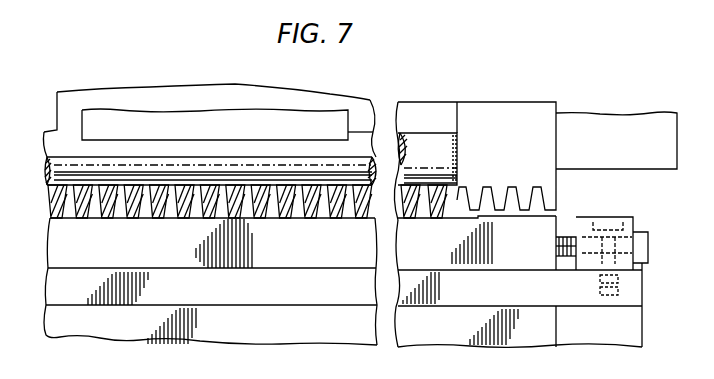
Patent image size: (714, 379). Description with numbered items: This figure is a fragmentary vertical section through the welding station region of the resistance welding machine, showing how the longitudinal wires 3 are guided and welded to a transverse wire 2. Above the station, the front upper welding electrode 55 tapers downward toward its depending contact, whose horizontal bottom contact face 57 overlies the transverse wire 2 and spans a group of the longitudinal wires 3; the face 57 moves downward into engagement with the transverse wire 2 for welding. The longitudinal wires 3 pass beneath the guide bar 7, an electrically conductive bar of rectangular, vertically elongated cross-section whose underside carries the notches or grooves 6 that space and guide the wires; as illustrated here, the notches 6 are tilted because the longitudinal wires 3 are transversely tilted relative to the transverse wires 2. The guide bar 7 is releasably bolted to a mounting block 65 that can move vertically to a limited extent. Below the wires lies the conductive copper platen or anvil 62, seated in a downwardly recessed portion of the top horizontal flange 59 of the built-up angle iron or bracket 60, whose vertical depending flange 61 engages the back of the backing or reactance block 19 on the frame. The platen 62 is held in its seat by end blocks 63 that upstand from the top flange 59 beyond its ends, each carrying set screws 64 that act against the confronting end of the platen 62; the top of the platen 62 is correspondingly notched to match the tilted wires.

The transverse wire 2 is at (423, 133).
The longitudinal wires 3 is at (144, 183).
The notches or grooves 6 is at (280, 207).
The guide bar 7 is at (514, 147).
The backing or reactance block 19 is at (306, 330).
The front upper welding electrode 55 is at (292, 122).
The bottom contact face or surface 57 is at (290, 143).
The top horizontal flange 59 is at (295, 268).
The angle iron or bracket 60 is at (643, 291).
The vertical depending flange 61 is at (611, 335).
The platen or anvil 62 is at (164, 258).
The end blocks 63 is at (633, 217).
The set screws 64 is at (650, 245).
The mounting block 65 is at (626, 152).